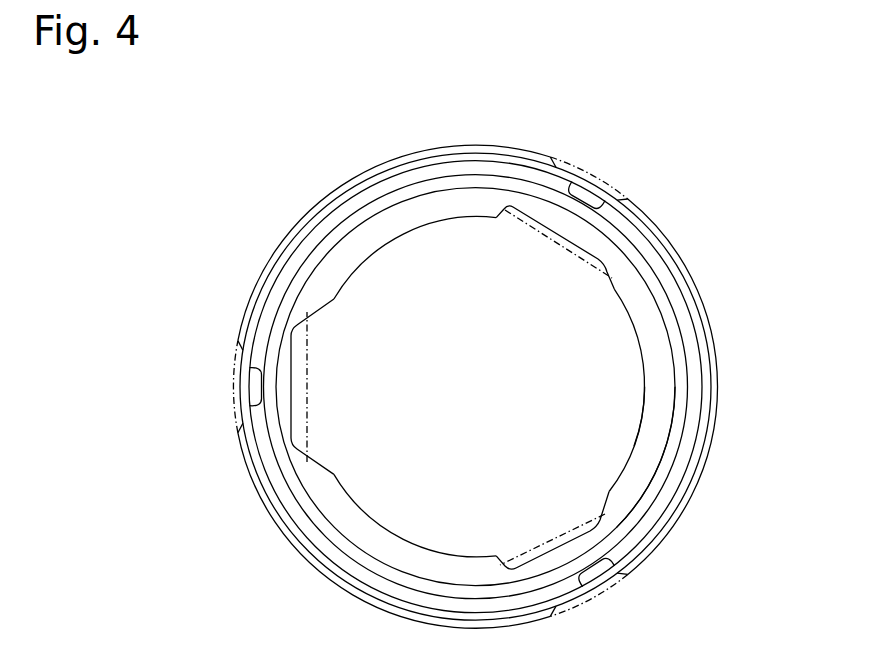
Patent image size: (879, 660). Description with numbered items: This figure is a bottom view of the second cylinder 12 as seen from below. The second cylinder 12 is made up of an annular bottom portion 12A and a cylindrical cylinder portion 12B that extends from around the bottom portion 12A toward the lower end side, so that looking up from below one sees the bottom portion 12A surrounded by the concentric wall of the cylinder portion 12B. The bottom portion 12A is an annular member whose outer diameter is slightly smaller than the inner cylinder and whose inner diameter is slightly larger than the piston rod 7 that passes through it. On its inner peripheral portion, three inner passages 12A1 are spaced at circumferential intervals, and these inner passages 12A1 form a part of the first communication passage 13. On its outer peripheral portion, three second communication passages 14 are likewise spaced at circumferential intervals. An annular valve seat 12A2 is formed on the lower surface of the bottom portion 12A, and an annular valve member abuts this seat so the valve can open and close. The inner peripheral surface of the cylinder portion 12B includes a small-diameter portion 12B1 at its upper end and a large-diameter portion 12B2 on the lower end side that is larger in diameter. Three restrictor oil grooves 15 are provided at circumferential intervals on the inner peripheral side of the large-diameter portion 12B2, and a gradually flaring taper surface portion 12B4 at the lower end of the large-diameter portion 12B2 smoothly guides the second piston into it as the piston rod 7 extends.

The piston rod 7 is at (560, 250).
The second cylinder 12 is at (273, 248).
The bottom portion 12A is at (387, 230).
The inner passages 12A1 is at (598, 265).
The annular valve seat 12A2 is at (640, 420).
The cylinder portion 12B is at (698, 344).
The small-diameter portion 12B1 is at (308, 495).
The large-diameter portion 12B2 is at (403, 585).
The taper surface portion 12B4 is at (660, 470).
The first communication passage 13 is at (530, 215).
The second communication passages 14 is at (590, 175).
The restrictor oil grooves 15 is at (587, 197).